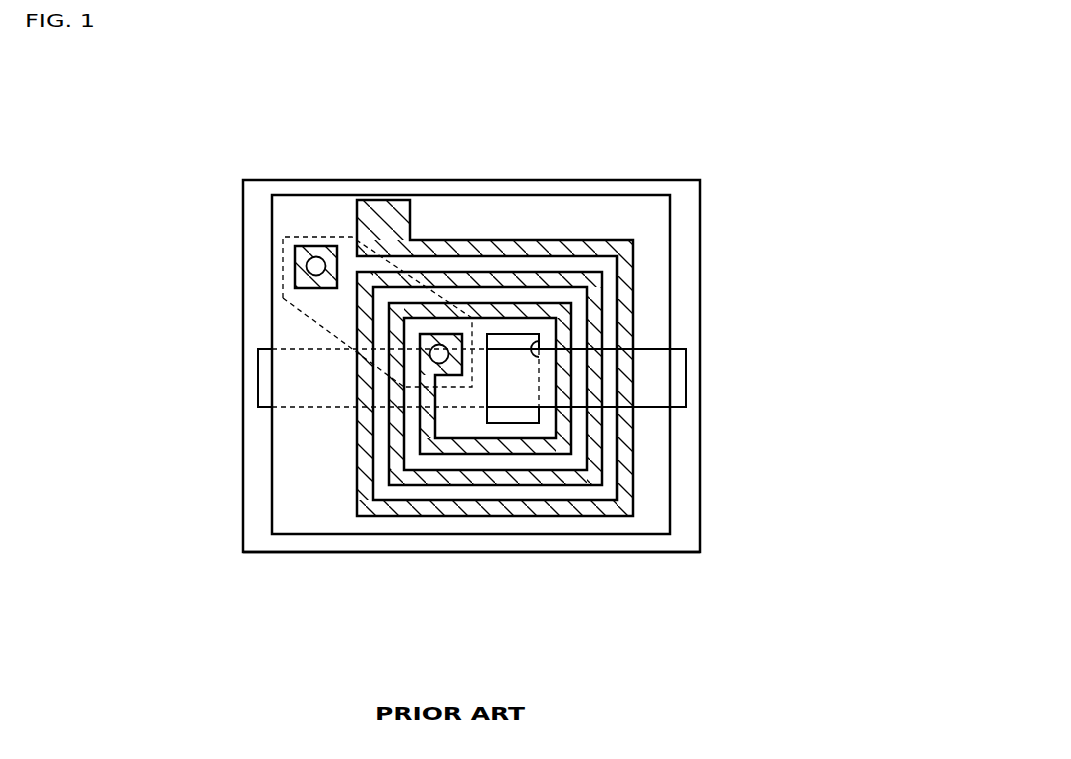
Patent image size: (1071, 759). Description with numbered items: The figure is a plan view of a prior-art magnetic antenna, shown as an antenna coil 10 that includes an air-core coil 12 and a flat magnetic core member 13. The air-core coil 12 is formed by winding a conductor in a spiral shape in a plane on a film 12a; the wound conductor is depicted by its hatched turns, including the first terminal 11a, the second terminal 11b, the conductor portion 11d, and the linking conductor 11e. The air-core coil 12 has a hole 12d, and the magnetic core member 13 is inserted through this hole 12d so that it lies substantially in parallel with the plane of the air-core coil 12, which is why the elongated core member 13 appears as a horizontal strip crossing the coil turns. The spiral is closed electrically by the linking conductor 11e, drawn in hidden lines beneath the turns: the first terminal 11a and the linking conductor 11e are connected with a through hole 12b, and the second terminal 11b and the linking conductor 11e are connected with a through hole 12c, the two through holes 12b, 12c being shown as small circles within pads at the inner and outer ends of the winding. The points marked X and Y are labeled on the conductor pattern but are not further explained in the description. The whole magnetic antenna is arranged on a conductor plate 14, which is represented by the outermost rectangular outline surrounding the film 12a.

The antenna coil 10 is at (222, 143).
The first terminal 11a is at (473, 327).
The second terminal 11b is at (313, 247).
The conductor 11d is at (431, 217).
The linking conductor 11e is at (320, 325).
The air-core coil 12 is at (674, 244).
The film 12a is at (672, 287).
The through hole 12b is at (430, 353).
The through hole 12c is at (308, 266).
The hole 12d is at (534, 342).
The magnetic core member 13 is at (258, 370).
The conductor plate 14 is at (606, 553).
The point X is at (420, 367).
The point Y is at (394, 207).